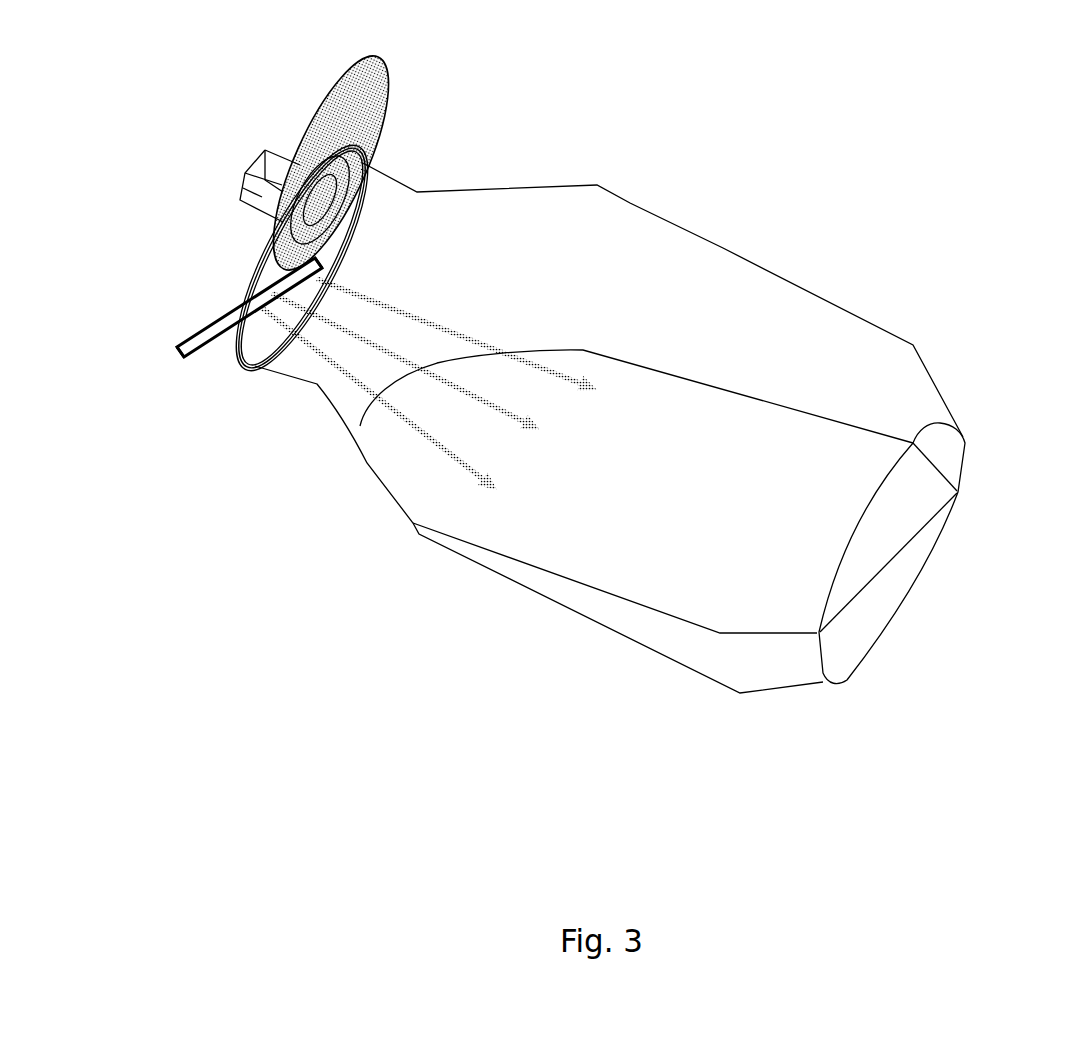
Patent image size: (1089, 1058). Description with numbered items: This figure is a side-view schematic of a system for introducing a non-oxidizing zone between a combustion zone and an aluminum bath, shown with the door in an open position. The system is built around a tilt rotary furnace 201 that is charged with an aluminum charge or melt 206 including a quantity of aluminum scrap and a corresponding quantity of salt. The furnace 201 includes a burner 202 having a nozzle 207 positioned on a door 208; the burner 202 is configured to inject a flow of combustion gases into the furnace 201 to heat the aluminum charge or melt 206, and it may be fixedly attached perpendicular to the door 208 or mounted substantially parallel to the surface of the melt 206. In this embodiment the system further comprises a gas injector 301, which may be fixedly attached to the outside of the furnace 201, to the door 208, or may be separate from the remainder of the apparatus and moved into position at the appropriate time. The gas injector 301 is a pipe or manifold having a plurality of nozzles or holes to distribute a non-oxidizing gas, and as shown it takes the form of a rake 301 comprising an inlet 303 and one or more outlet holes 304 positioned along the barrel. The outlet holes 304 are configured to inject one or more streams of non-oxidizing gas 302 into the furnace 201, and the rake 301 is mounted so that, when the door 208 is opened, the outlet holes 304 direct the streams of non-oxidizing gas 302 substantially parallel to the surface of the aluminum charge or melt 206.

The tilt rotary furnace 201 is at (723, 248).
The burner 202 is at (272, 150).
The aluminum charge or melt 206 is at (923, 553).
The nozzle 207 is at (338, 205).
The door 208 is at (385, 106).
The gas injector 301 is at (180, 340).
The streams of non-oxidizing gas 302 is at (538, 432).
The inlet 303 is at (177, 357).
The outlet holes 304 is at (320, 264).